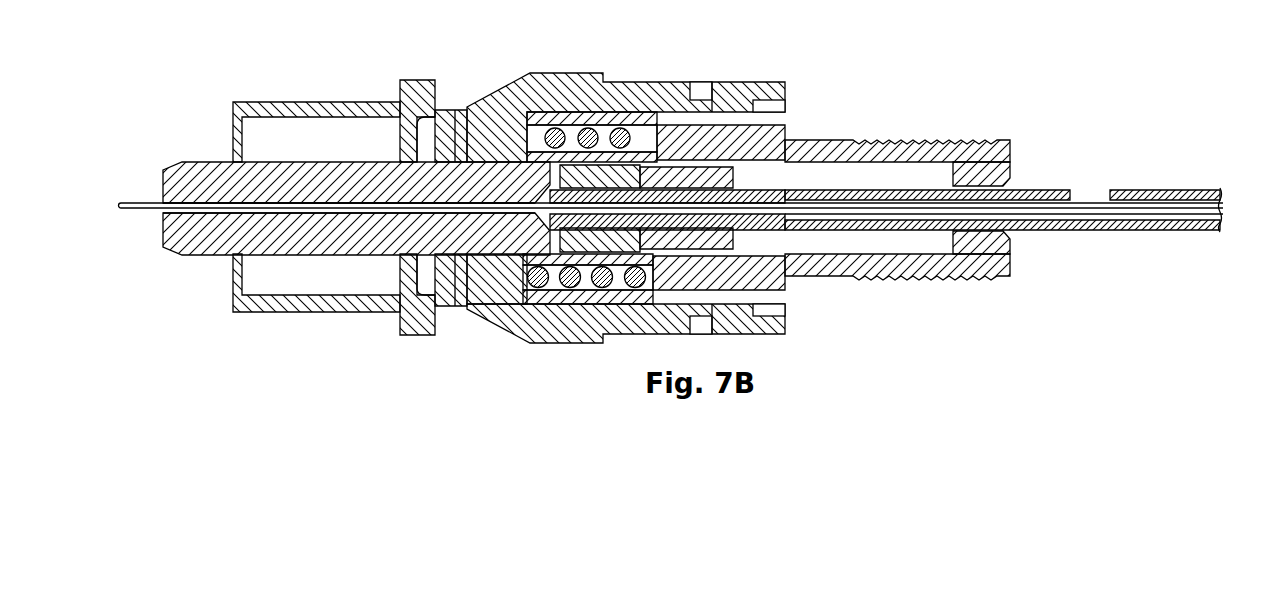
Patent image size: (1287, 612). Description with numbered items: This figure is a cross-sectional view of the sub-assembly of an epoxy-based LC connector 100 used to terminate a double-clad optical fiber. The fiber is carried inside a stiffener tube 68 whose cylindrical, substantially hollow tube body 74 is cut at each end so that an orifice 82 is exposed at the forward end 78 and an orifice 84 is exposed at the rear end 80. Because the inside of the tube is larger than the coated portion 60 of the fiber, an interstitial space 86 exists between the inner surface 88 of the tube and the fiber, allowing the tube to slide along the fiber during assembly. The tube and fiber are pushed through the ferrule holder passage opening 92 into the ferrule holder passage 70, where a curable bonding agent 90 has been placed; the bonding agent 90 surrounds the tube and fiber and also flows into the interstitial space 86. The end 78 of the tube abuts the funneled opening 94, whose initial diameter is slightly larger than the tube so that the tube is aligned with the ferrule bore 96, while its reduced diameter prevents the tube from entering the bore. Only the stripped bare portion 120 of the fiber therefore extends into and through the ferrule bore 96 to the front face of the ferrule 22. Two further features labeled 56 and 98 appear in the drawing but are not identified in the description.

The connector 100 is at (664, 211).
The ferrule 22 is at (193, 250).
The bare portion of optical fiber 120 is at (118, 210).
The ferrule bore 96 is at (308, 211).
The orifice 82 is at (463, 115).
The housing 56 is at (578, 112).
The funneled opening 94 is at (470, 292).
The bonding agent 90 is at (778, 193).
The end of tube 78 is at (537, 262).
The collet 98 is at (612, 188).
The ferrule holder passage 70 is at (738, 145).
The ferrule holder passage opening 92 is at (1003, 180).
The coated portion of optical fiber 60 is at (1024, 225).
The stiffener tube 68 is at (1064, 184).
The inner surface of stiffener tube 88 is at (1170, 191).
The tube body 74 is at (1050, 238).
The interstitial space 86 is at (1097, 231).
The end of tube 80 is at (1228, 238).
The orifice 84 is at (1228, 211).